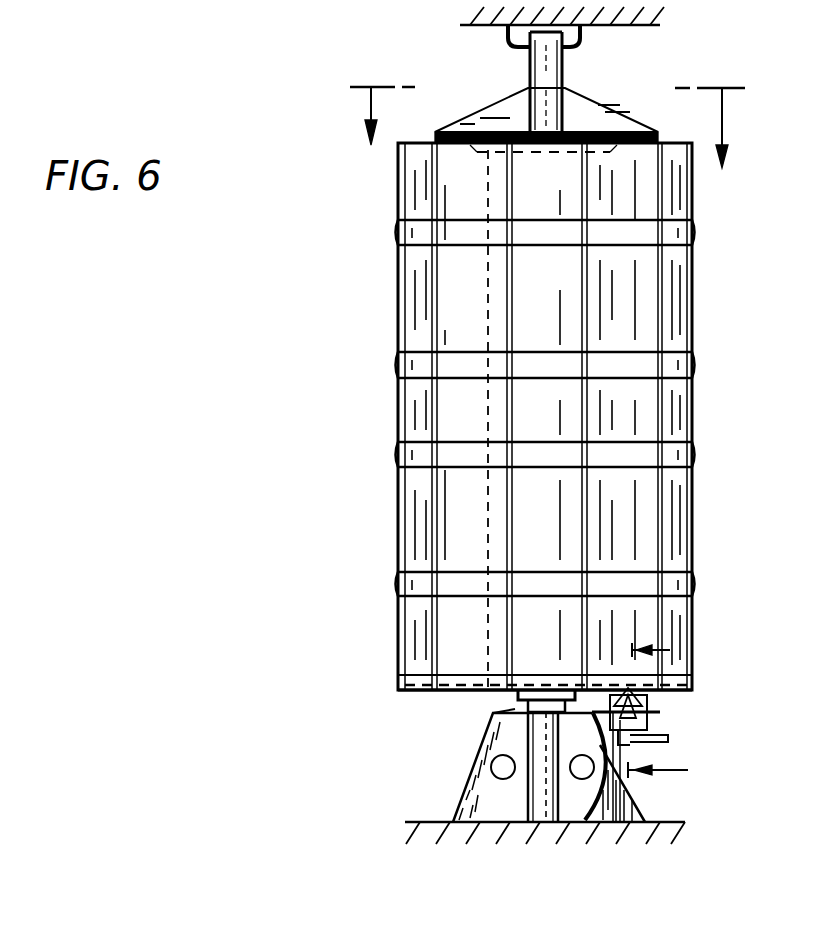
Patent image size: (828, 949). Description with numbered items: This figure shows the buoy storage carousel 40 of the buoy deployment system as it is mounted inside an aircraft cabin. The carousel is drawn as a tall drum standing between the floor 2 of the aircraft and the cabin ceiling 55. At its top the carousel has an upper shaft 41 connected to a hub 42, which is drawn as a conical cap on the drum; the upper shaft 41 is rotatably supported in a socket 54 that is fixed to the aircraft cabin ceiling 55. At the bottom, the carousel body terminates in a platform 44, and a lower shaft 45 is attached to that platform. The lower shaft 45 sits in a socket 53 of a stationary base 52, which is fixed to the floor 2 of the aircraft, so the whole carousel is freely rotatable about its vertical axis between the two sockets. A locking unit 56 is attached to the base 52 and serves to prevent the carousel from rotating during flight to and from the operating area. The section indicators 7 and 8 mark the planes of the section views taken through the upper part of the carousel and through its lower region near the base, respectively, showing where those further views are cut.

The floor 2 is at (600, 837).
The section line 7- 7 is at (546, 127).
The section line 8- 8 is at (672, 713).
The buoy storage carousel 40 is at (708, 312).
The upper shaft 41 is at (568, 78).
The hub 42 is at (505, 108).
The platform 44 is at (416, 696).
The lower shaft 45 is at (528, 704).
The stationary base 52 is at (460, 808).
The socket 53 is at (496, 722).
The socket 54 is at (575, 40).
The ceiling 55 is at (458, 26).
The locking unit 56 is at (660, 714).